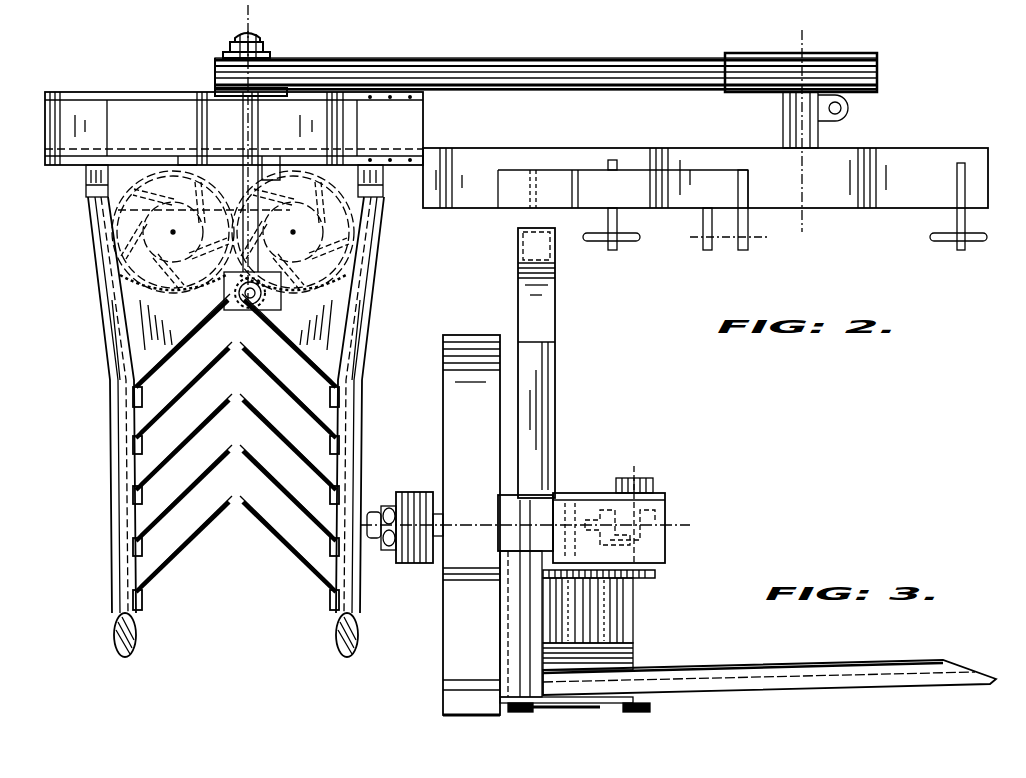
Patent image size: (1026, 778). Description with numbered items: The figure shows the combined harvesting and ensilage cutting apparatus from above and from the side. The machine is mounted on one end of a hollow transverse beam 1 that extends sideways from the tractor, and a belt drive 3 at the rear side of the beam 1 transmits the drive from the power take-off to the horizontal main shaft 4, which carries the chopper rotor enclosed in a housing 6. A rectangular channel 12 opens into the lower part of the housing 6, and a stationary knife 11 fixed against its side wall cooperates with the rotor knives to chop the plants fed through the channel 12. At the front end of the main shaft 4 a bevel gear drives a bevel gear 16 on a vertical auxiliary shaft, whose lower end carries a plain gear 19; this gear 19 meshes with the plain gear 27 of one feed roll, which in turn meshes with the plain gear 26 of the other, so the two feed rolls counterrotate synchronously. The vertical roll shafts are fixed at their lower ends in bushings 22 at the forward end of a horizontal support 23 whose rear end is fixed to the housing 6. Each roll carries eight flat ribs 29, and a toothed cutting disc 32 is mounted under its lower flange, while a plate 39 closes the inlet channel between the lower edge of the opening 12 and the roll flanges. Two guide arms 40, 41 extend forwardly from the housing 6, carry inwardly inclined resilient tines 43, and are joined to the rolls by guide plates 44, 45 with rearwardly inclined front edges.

In FIG. 2, the hollow transverse beam 1 is at (462, 155).
In FIG. 3, the hollow transverse beam 1 is at (540, 495).
In FIG. 2, the belt drive 3 is at (216, 62).
In FIG. 3, the belt drive 3 is at (414, 492).
In FIG. 2, the horizontal main shaft 4 is at (243, 127).
In FIG. 3, the horizontal main shaft 4 is at (610, 498).
In FIG. 3, the housing 6 is at (460, 676).
In FIG. 2, the stationary knife 11 is at (270, 160).
In FIG. 2, the rectangular channel 12 is at (232, 178).
In FIG. 3, the bevel gear 16 is at (650, 505).
In FIG. 2, the plain gear 19 is at (248, 312).
In FIG. 3, the plain gear 19 is at (655, 576).
In FIG. 3, the bushings 22 is at (577, 712).
In FIG. 3, the horizontal support 23 is at (540, 715).
In FIG. 2, the plain gear 26 is at (150, 298).
In FIG. 3, the plain gear 26 is at (628, 580).
In FIG. 2, the plain gear 27 is at (325, 298).
In FIG. 3, the flat ribs 29 is at (632, 652).
In FIG. 3, the cutting disc 32 is at (650, 712).
In FIG. 2, the plate 39 is at (197, 164).
In FIG. 2, the guide arm 40 is at (118, 570).
In FIG. 3, the guide arm 40 is at (788, 688).
In FIG. 2, the guide arm 41 is at (352, 590).
In FIG. 2, the resilient tines 43 is at (252, 467).
In FIG. 2, the guide plate 44 is at (118, 340).
In FIG. 2, the guide plate 45 is at (340, 332).